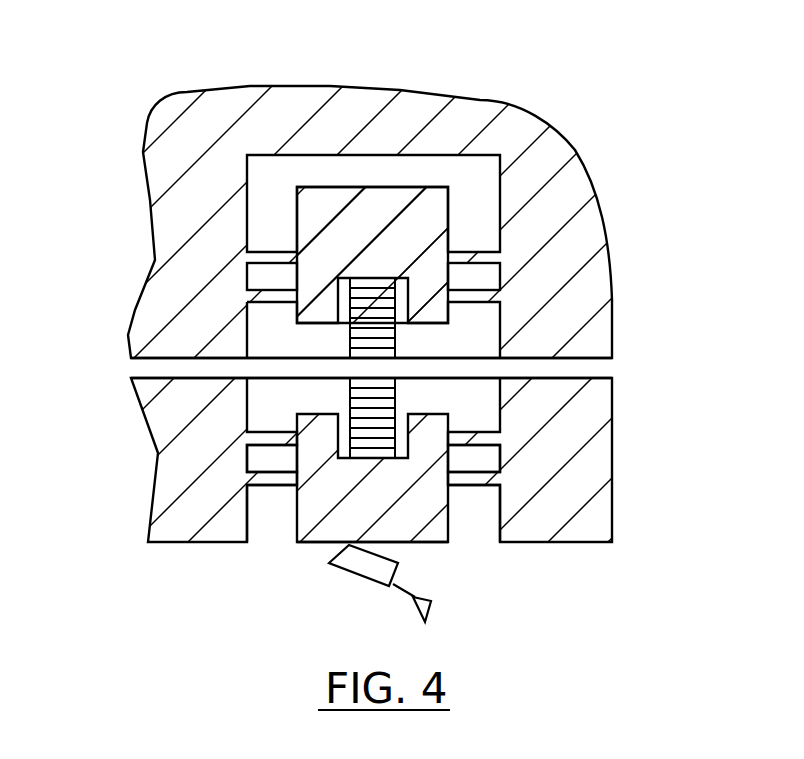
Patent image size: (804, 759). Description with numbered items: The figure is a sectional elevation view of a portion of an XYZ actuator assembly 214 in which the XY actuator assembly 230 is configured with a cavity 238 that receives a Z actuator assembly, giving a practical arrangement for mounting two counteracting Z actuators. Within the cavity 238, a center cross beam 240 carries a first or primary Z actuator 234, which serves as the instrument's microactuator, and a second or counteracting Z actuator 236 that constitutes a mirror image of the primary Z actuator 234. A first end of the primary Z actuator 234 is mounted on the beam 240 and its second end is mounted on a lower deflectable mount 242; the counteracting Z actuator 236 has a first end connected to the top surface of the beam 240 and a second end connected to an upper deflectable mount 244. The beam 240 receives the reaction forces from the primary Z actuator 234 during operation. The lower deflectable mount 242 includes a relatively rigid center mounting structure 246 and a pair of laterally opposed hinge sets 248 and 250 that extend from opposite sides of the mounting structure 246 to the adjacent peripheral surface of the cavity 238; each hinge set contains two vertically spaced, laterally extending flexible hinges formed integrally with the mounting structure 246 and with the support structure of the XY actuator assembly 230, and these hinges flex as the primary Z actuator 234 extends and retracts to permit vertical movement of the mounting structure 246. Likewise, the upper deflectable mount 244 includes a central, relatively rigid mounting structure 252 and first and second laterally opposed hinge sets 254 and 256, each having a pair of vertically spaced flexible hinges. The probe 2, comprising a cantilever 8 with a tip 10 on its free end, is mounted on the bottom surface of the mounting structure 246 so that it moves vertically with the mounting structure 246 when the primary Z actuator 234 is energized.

The XYZ actuator assembly 214 is at (568, 118).
The XY actuator assembly 230 is at (615, 296).
The upper deflectable mount 244 is at (312, 182).
The central mounting structure 252 is at (378, 192).
The counteracting Z actuator 236 is at (393, 342).
The first hinge set 254 is at (263, 292).
The second hinge set 256 is at (487, 285).
The center cross beam 240 is at (264, 355).
The primary Z actuator 234 is at (388, 400).
The hinge set 248 is at (262, 488).
The hinge set 250 is at (490, 464).
The lower deflectable mount 242 is at (455, 511).
The cavity 238 is at (250, 535).
The center mounting structure 246 is at (445, 538).
The probe 2 is at (368, 580).
The cantilever 8 is at (406, 592).
The tip 10 is at (430, 610).